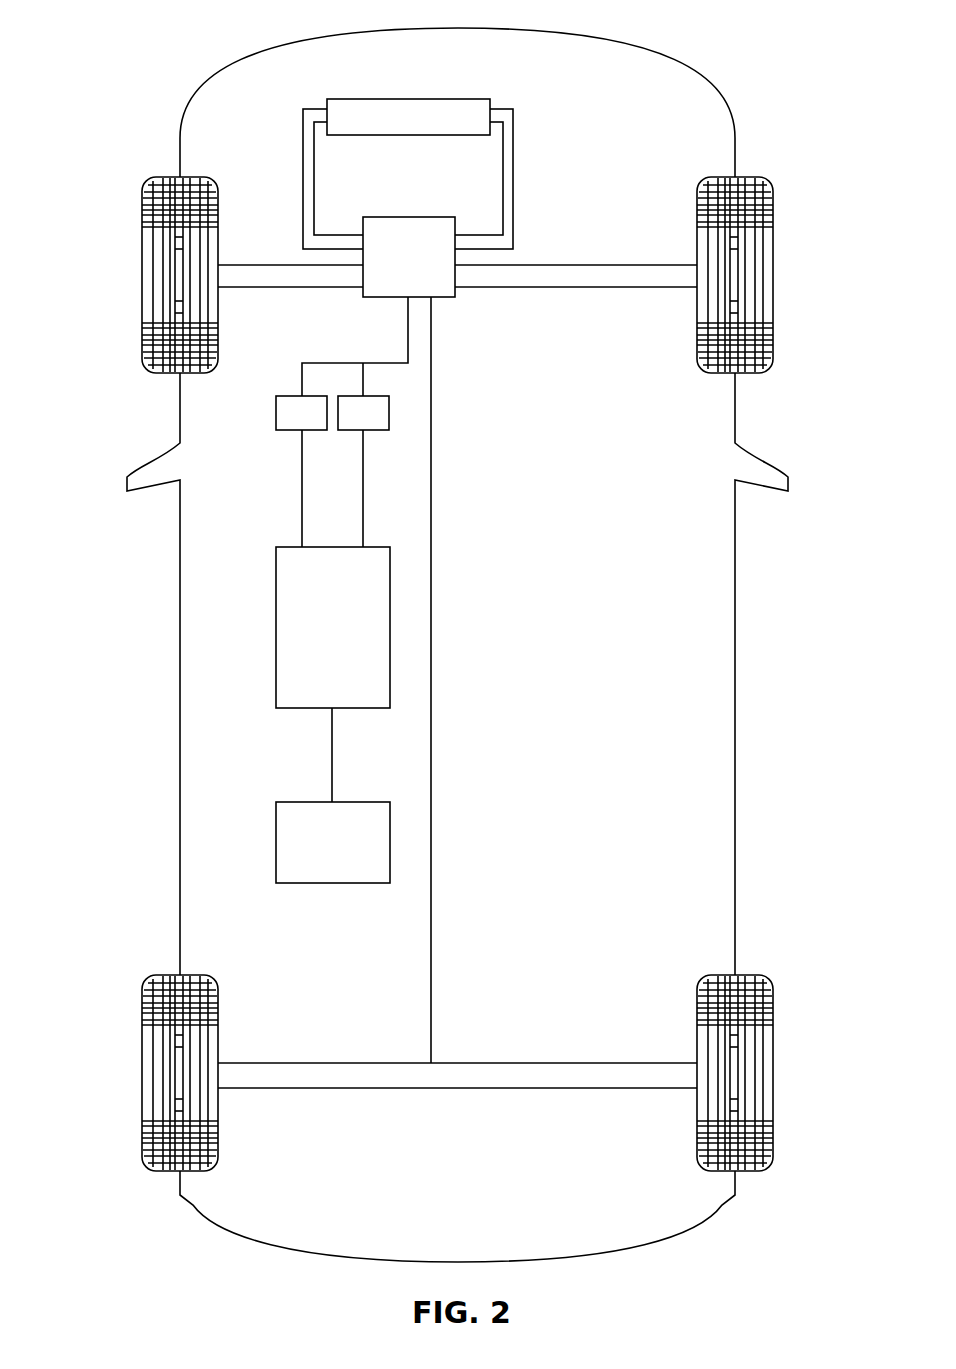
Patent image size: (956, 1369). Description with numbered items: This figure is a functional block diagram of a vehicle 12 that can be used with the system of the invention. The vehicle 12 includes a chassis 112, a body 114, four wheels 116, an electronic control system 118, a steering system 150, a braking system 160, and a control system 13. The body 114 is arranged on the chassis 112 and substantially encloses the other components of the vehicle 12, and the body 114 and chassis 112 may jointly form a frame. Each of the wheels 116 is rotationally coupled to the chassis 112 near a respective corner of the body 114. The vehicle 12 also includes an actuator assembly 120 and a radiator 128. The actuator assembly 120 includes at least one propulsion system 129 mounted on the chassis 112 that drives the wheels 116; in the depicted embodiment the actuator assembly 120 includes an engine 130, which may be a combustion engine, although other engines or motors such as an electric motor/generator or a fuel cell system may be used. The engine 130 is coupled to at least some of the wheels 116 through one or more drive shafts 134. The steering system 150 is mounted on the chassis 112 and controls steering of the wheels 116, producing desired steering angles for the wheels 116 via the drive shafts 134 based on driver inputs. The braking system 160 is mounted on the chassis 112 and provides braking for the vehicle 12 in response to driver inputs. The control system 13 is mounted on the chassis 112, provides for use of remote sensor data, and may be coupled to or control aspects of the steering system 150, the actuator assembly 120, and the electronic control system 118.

The vehicle 12 is at (168, 53).
The control system 13 is at (276, 842).
The chassis 112 is at (431, 1004).
The body 114 is at (180, 655).
The wheels 116 is at (142, 276).
The electronic control system 118 is at (276, 627).
The actuator assembly 120 is at (444, 301).
The radiator 128 is at (457, 98).
The propulsion system 129 is at (408, 217).
The engine 130 is at (404, 237).
The drive shafts 134 is at (265, 265).
The steering system 150 is at (276, 412).
The braking system 160 is at (389, 413).